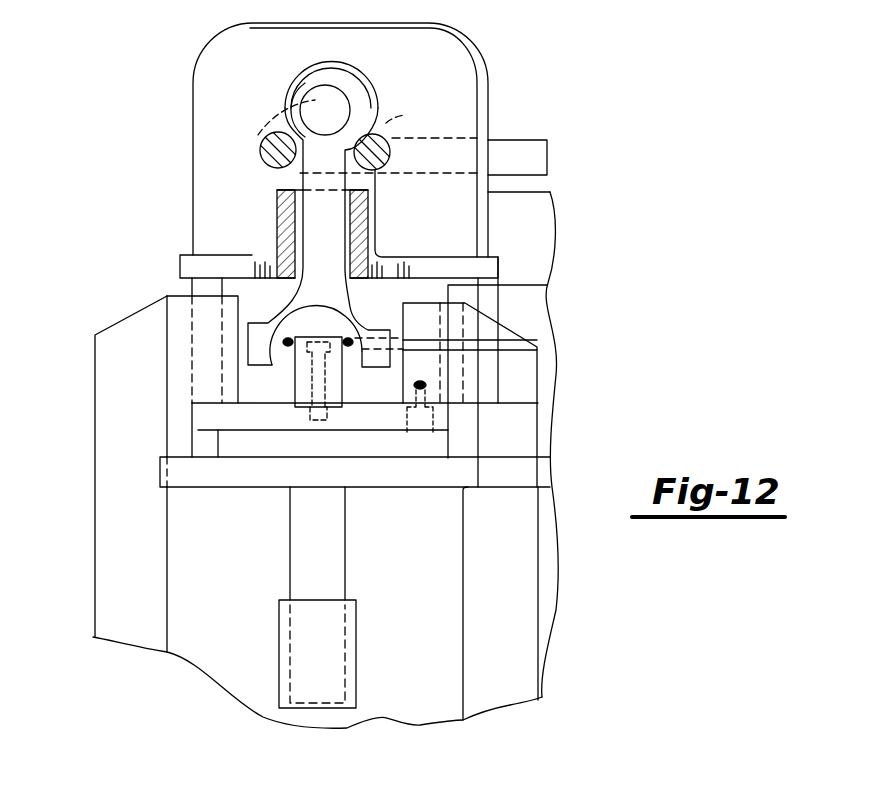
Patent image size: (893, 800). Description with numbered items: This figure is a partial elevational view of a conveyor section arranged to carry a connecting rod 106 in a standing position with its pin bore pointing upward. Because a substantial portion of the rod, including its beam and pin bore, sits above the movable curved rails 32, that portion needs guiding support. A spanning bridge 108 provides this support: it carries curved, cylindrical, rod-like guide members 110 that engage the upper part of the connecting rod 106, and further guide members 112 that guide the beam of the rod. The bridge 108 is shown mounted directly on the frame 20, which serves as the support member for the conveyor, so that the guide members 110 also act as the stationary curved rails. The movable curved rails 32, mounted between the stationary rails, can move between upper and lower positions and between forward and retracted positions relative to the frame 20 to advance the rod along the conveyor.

The frame 20 is at (96, 441).
The movable curved rails 32 is at (347, 338).
The connecting rod 106 is at (333, 182).
The spanning bridge 108 is at (480, 53).
The guide members 110 is at (262, 145).
The further guide members 112 is at (285, 205).